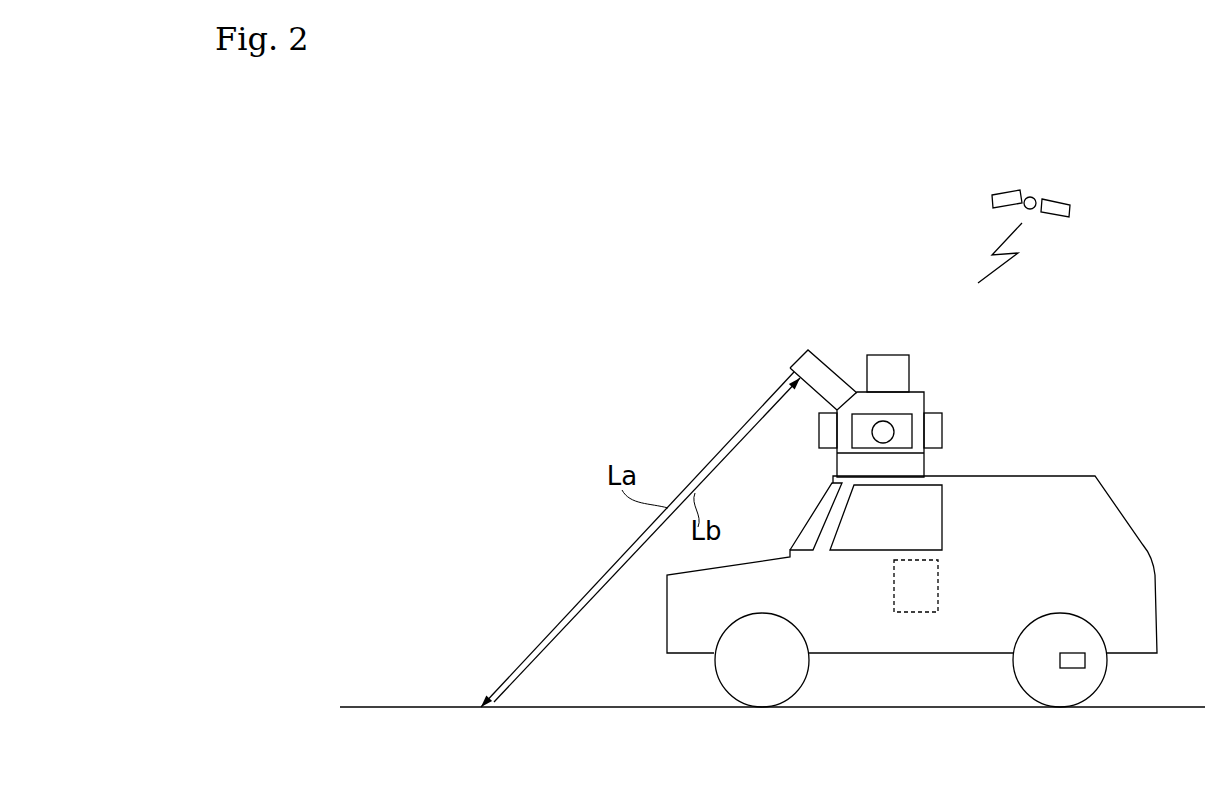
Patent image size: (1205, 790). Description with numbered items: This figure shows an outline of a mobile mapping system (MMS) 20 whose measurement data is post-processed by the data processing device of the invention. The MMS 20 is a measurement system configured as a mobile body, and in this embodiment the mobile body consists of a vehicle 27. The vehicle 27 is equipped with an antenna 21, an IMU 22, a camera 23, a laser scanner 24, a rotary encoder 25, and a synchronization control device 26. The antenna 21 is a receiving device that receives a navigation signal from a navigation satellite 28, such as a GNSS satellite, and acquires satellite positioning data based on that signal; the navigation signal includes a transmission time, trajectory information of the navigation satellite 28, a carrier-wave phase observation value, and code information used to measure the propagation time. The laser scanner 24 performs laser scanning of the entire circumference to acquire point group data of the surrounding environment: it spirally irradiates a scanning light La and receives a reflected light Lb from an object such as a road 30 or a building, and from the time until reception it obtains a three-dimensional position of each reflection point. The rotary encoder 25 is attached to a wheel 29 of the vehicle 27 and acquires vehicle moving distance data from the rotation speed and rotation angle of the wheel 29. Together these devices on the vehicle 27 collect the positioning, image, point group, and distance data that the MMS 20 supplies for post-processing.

The mobile mapping system 20 is at (778, 373).
The antenna 21 is at (909, 368).
The IMU 22 is at (926, 465).
The camera 23 is at (893, 417).
The laser scanner 24 is at (808, 352).
The rotary encoder 25 is at (1073, 668).
The synchronization control device 26 is at (913, 613).
The vehicle 27 is at (1147, 545).
The navigation satellite 28 is at (1047, 215).
The wheel 29 is at (1017, 683).
The road 30 is at (398, 707).